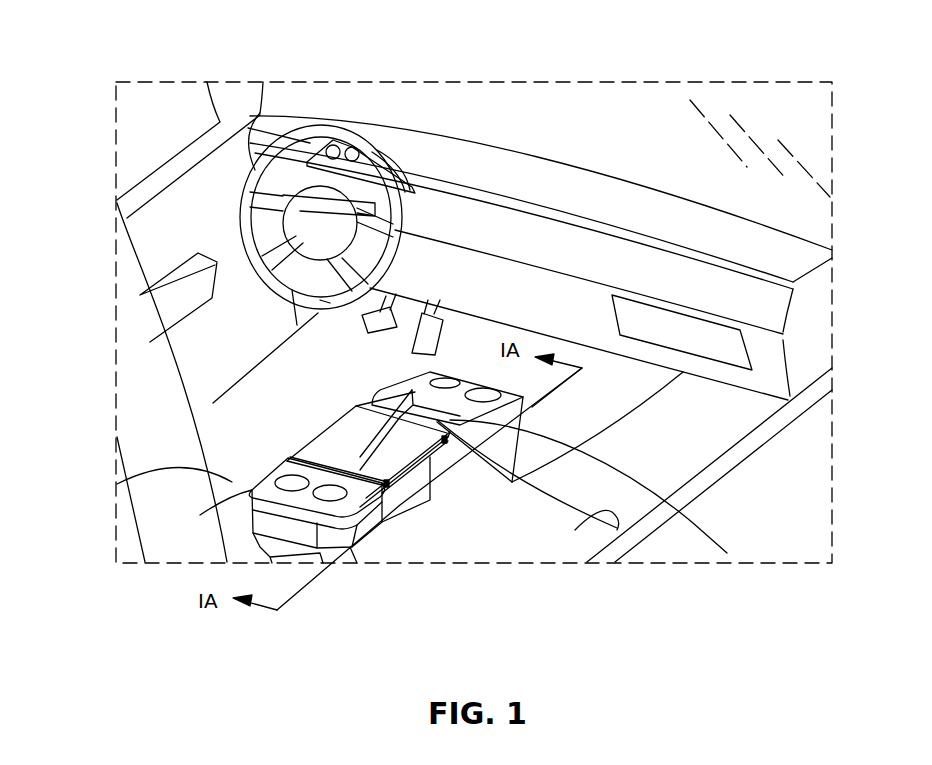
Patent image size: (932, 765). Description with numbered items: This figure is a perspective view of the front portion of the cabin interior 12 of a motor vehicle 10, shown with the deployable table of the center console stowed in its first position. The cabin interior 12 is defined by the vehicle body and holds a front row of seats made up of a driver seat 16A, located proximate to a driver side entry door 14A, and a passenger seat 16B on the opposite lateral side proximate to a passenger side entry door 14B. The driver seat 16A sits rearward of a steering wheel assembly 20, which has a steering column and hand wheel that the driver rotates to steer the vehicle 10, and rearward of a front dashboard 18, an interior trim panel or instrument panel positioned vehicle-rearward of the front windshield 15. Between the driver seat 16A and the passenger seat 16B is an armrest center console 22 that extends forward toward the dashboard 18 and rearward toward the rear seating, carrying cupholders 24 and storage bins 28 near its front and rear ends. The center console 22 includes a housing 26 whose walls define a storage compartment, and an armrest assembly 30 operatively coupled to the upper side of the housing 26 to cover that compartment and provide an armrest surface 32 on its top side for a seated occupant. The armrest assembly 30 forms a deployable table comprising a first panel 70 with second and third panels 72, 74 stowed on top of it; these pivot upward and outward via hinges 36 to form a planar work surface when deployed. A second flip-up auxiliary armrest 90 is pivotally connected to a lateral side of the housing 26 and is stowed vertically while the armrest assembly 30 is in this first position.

The motor vehicle 10 is at (133, 55).
The cabin interior 12 is at (193, 383).
The driver side entry door 14A is at (208, 140).
The passenger side entry door 14B is at (780, 418).
The front windshield 15 is at (750, 130).
The driver seat 16A is at (117, 484).
The passenger seat 16B is at (575, 530).
The front dashboard 18 is at (650, 202).
The steering wheel assembly 20 is at (238, 200).
The center console 22 is at (440, 372).
The cupholders 24 is at (483, 393).
The housing 26 is at (428, 472).
The storage bins 28 is at (540, 410).
The armrest assembly 30 is at (292, 436).
The armrest surface 32 is at (352, 438).
The hinges 36 is at (388, 488).
The first panel 70 is at (400, 478).
The second panel 72 is at (346, 430).
The third panel 74 is at (425, 462).
The second flip-up auxiliary armrest 90 is at (447, 458).